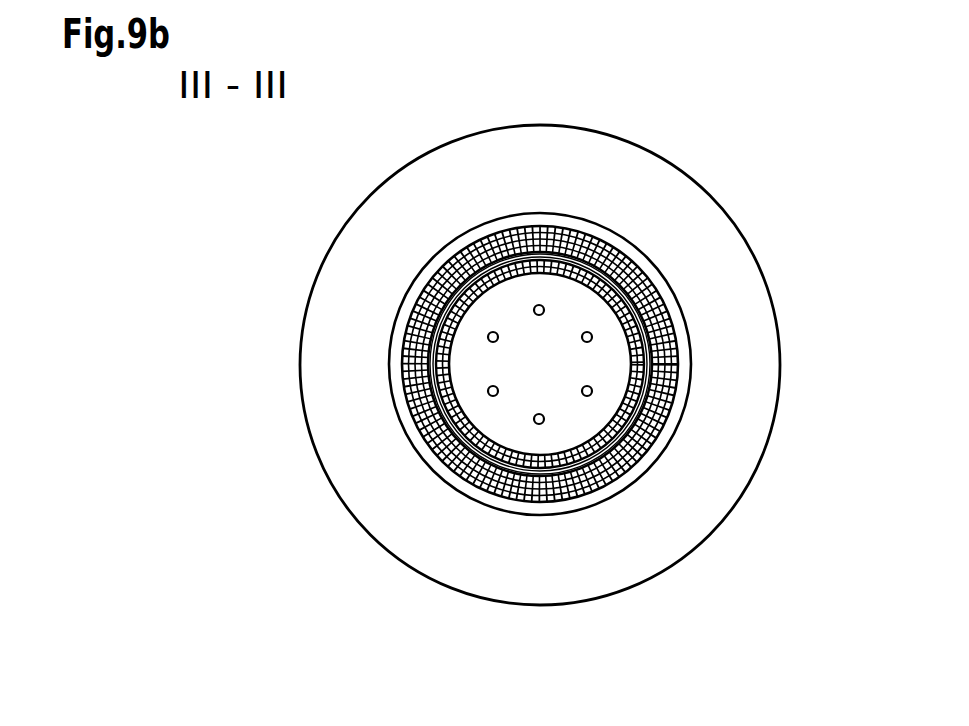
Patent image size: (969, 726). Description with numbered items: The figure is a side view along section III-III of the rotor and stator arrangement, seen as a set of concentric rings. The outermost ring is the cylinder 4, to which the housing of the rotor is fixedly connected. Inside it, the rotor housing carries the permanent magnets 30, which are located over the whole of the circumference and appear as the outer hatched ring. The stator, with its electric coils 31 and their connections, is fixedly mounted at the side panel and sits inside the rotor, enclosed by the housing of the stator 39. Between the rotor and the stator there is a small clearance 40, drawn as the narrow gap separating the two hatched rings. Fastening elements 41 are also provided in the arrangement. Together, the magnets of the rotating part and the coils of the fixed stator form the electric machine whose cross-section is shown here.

The cylinder 4 is at (383, 229).
The permanent magnets 30 is at (653, 290).
The electric coils 31 is at (677, 352).
The housing of the stator 39 is at (414, 327).
The clearance 40 is at (655, 439).
The fastening elements 41 is at (432, 440).